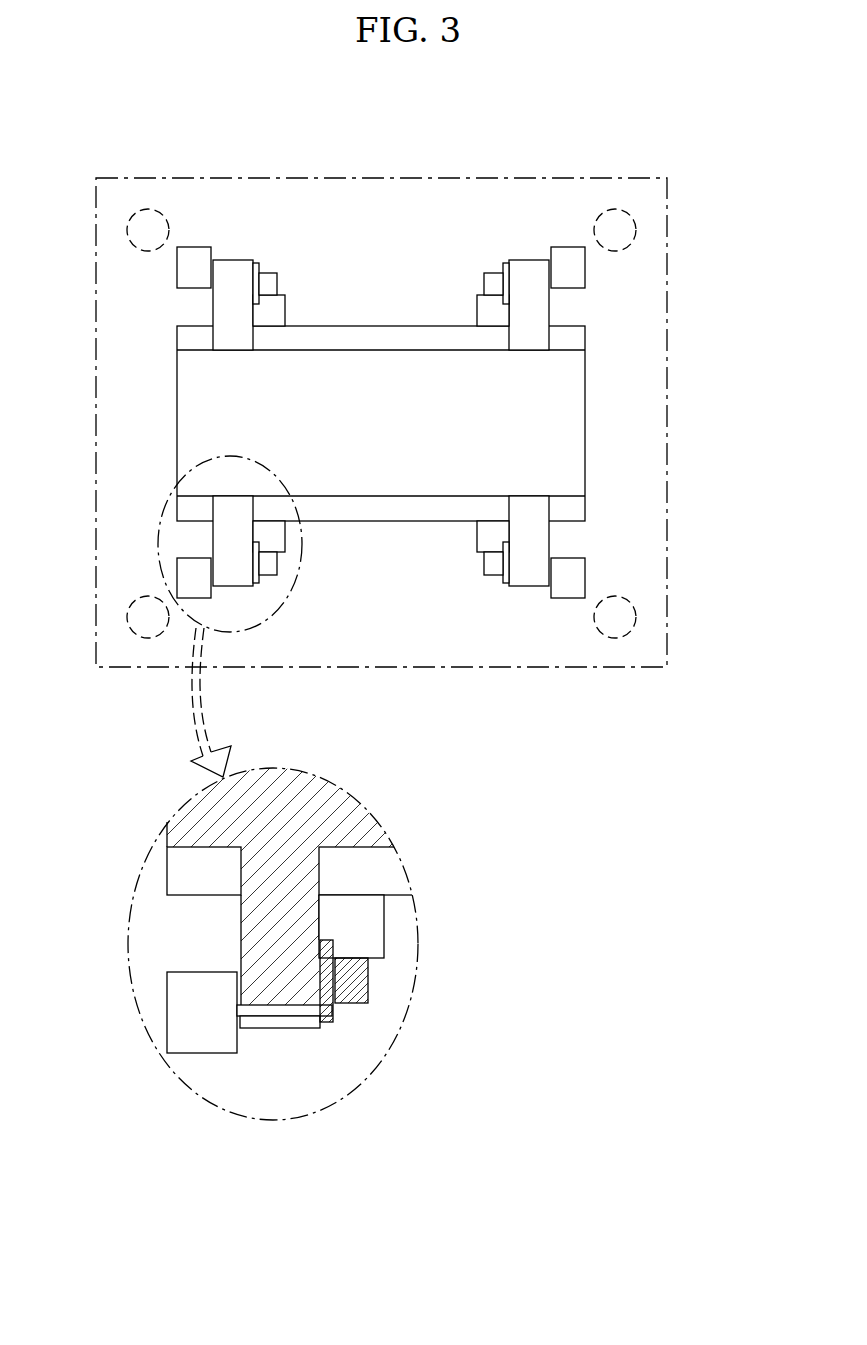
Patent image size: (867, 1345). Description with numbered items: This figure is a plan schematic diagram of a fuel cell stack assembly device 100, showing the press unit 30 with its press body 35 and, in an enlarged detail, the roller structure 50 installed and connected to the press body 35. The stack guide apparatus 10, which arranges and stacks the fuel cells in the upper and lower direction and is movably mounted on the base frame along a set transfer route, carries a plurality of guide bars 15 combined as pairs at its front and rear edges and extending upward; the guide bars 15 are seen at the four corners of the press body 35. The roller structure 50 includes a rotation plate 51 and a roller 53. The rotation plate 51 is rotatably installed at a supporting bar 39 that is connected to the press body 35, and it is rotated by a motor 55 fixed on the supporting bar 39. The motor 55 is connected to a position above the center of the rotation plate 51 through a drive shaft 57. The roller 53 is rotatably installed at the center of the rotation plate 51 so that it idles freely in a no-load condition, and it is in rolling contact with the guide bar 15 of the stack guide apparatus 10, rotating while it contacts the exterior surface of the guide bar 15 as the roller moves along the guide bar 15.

The transmission assembly 100 is at (428, 123).
The housing / mounting plate 30 is at (680, 405).
The press body 35 is at (585, 462).
The supporting bar 39 is at (225, 542).
The stack guide apparatus 10 is at (477, 565).
The guide bar 15 is at (287, 536).
The roller structure 50 is at (272, 590).
The rotation plate 51 is at (350, 965).
The roller 53 is at (360, 993).
The motor 55 is at (167, 1001).
The drive shaft 57 is at (273, 1012).